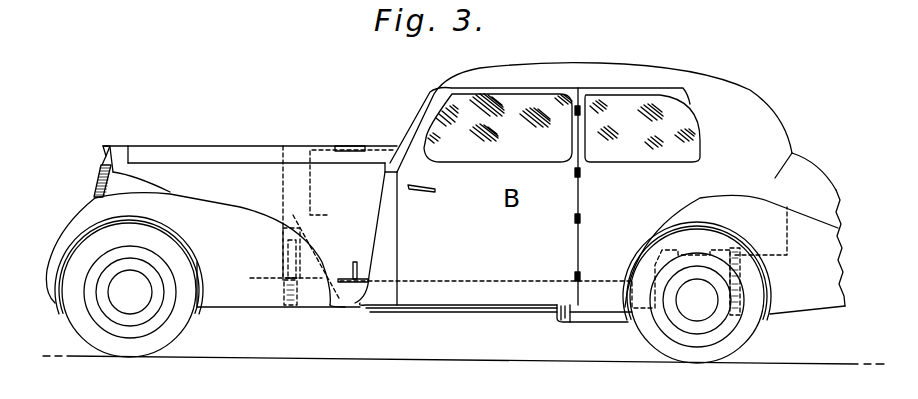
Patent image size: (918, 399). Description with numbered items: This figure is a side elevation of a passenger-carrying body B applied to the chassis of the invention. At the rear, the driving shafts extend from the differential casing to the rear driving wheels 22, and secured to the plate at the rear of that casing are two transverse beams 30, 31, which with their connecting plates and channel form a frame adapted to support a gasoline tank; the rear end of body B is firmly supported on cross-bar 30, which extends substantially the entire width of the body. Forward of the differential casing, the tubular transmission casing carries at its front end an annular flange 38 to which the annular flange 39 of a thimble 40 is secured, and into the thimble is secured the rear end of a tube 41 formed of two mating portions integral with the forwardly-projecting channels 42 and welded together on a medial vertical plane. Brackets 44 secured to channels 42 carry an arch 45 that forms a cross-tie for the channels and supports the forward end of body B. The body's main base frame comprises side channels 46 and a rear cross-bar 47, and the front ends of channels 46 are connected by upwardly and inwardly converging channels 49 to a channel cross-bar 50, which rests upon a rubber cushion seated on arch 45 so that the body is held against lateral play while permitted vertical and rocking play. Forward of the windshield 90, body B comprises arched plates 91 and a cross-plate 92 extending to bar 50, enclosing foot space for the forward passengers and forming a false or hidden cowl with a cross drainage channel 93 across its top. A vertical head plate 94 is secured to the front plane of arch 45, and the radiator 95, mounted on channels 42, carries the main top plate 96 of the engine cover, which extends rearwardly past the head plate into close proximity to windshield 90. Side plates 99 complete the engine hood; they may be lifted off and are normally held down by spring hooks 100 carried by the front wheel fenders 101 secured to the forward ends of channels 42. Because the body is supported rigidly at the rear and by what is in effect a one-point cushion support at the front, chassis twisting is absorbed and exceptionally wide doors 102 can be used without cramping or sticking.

The rear driving wheel 22 is at (759, 335).
The transverse beam 30 is at (738, 276).
The transverse beam 31 is at (738, 303).
The annular flange 38 is at (566, 318).
The annular flange 39 is at (558, 321).
The thimble 40 is at (554, 313).
The tube 41 is at (497, 312).
The channel 42 is at (336, 307).
The bracket 44 is at (287, 300).
The arch 45 is at (289, 262).
The side channel 46 is at (590, 280).
The rear cross-bar 47 is at (738, 248).
The converging channel 49 is at (313, 262).
The channel cross-bar 50 is at (298, 240).
The windshield 90 is at (421, 120).
The arched plate 91 is at (390, 218).
The cross-plate 92 is at (312, 184).
The cross drainage channel 93 is at (413, 130).
The head plate 94 is at (283, 184).
The radiator 95 is at (120, 152).
The main top plate 96 is at (228, 149).
The side plate 99 is at (357, 237).
The spring hook 100 is at (355, 262).
The front wheel fender 101 is at (232, 225).
The door 102 is at (480, 270).